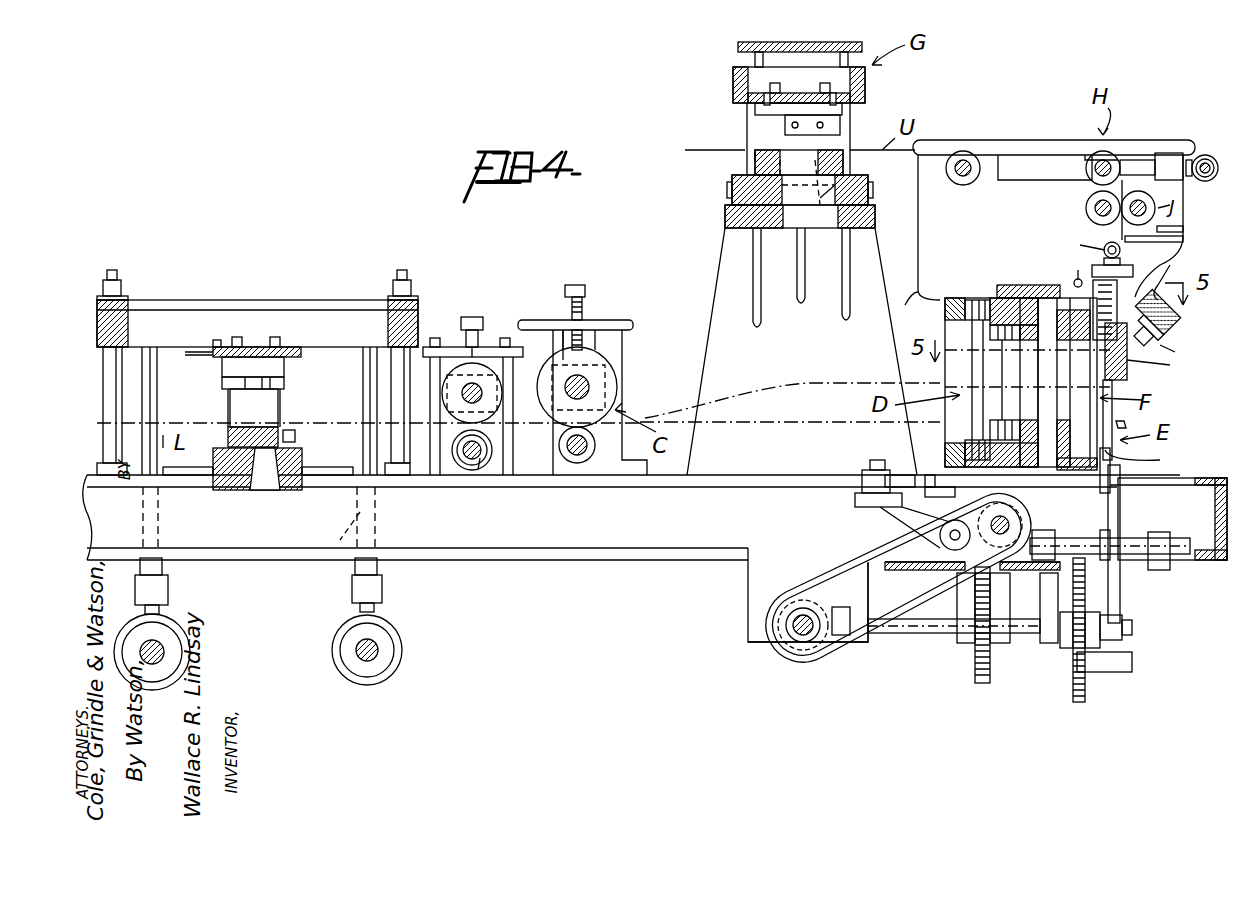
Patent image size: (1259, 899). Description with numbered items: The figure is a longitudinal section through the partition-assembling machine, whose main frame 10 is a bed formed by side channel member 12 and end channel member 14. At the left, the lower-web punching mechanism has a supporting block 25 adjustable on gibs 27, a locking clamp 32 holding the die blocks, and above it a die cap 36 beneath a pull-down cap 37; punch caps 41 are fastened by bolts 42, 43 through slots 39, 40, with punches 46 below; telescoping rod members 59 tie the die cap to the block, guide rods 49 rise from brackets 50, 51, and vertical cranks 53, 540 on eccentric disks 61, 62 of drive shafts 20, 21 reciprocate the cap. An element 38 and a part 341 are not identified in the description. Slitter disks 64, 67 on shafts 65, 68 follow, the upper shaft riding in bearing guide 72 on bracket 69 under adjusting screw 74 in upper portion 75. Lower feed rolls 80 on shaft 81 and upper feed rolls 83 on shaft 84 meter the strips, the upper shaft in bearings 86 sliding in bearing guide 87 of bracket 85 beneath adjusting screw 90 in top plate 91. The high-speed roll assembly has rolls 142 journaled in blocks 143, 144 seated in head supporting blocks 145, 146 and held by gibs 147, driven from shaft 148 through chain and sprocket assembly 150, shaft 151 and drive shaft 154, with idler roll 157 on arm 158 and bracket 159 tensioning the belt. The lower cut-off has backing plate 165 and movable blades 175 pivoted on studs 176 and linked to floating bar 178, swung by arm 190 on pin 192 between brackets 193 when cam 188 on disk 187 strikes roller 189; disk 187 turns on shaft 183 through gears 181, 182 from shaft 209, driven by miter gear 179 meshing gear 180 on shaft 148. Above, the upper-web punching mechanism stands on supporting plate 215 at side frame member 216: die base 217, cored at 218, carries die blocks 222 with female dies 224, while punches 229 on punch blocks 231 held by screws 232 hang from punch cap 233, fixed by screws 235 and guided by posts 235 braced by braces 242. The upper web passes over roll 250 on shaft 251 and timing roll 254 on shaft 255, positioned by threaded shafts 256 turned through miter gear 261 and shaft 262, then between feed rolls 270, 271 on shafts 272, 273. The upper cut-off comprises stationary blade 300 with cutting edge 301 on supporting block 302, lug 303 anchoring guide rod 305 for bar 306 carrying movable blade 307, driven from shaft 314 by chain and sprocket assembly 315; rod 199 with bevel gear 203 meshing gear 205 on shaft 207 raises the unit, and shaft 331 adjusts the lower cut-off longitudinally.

The main frame 10 is at (589, 575).
The side channel member 12 is at (535, 538).
The end channel member 14 is at (1218, 562).
The drive shaft 20 is at (160, 645).
The drive shaft 21 is at (372, 640).
The supporting block 25 is at (233, 490).
The gib 27 is at (333, 478).
The locking clamp 32 is at (295, 438).
The die cap 36 is at (300, 352).
The pull-down cap 37 is at (318, 300).
The beam 38 is at (175, 330).
The slot 39 is at (205, 357).
The slot 40 is at (284, 367).
The punch cap 41 is at (284, 383).
The bolt 42 is at (237, 337).
The bolt 43 is at (275, 337).
The punch 46 is at (254, 408).
The guide rod 49 is at (122, 365).
The bracket 50 is at (418, 305).
The bracket 51 is at (130, 305).
The vertical crank 53 is at (330, 553).
The telescoping rod member 59 is at (228, 410).
The disk 61 is at (382, 636).
The disk 62 is at (168, 645).
The rotary slitter disk 64 is at (482, 462).
The shaft 65 is at (466, 460).
The rotary slitter disk 67 is at (495, 418).
The shaft 68 is at (482, 392).
The bracket 69 is at (445, 347).
The bearing guide 72 is at (502, 380).
The adjusting screw 74 is at (476, 317).
The upper portion of bracket 75 is at (485, 345).
The lower feed roll 80 is at (590, 455).
The shaft 81 is at (577, 457).
The upper feed roll 83 is at (615, 375).
The shaft 84 is at (589, 385).
The bracket 85 is at (585, 345).
The bearing 86 is at (610, 398).
The bearing guide 87 is at (600, 338).
The adjusting screw 90 is at (585, 290).
The top plate 91 is at (542, 320).
The roll 142 is at (972, 368).
The block 143 is at (975, 438).
The block 144 is at (955, 300).
The head supporting block 145 is at (905, 285).
The head supporting block 146 is at (868, 462).
The gib 147 is at (930, 290).
The shaft 148 is at (788, 640).
The chain and sprocket assembly 150 is at (835, 572).
The shaft 151 is at (962, 527).
The drive shaft 154 is at (945, 490).
The idler roll 157 is at (862, 477).
The arm 158 is at (855, 500).
The bracket 159 is at (876, 508).
The backing plate 165 is at (1040, 285).
The movable blade 175 is at (1105, 395).
The stud 176 is at (1160, 458).
The floating bar 178 is at (1120, 487).
The miter gear 179 is at (850, 608).
The gear 180 is at (792, 672).
The gear 181 is at (963, 648).
The gear 182 is at (985, 688).
The shaft 183 is at (1030, 628).
The disk 187 is at (1073, 685).
The cam 188 is at (1112, 672).
The roller 189 is at (1130, 635).
The arm 190 is at (1120, 595).
The pin 192 is at (1137, 542).
The bracket 193 is at (1170, 540).
The rod 199 is at (1093, 302).
The bevel gear 203 is at (1095, 268).
The beveled gear 205 is at (1080, 237).
The transverse shaft 207 is at (1120, 250).
The shaft 209 is at (915, 635).
The supporting plate 215 is at (727, 218).
The side frame member 216 is at (725, 265).
The die base 217 is at (735, 190).
The cored portion 218 is at (865, 185).
The die block 222 is at (755, 165).
The female die 224 is at (770, 150).
The punch 229 is at (803, 177).
The punch block 231 is at (758, 115).
The screw 232 is at (842, 125).
The punch cap 233 is at (865, 82).
The guide post 235 is at (752, 60).
The brace 242 is at (840, 50).
The roll 250 is at (968, 180).
The shaft 251 is at (965, 150).
The guiding roll 254 is at (1098, 148).
The shaft 255 is at (1108, 150).
The shaft 256 is at (1140, 160).
The miter gear 261 is at (1205, 153).
The horizontal shaft 262 is at (1160, 226).
The feed roll 270 is at (1165, 235).
The feed roll 271 is at (1090, 203).
The shaft 272 is at (1148, 200).
The shaft 273 is at (1096, 210).
The stationary cutting blade 300 is at (1128, 350).
The cutting edge 301 is at (1170, 372).
The supporting block 302 is at (1178, 335).
The lug 303 is at (1180, 315).
The guide rod 305 is at (1172, 268).
The bar 306 is at (1178, 298).
The movable cutting blade 307 is at (1180, 352).
The shaft 314 is at (1010, 520).
The chain and sprocket assembly 315 is at (930, 625).
The transversely extending shaft 331 is at (1126, 425).
The pin 341 is at (1085, 271).
The vertical crank 540 is at (160, 510).